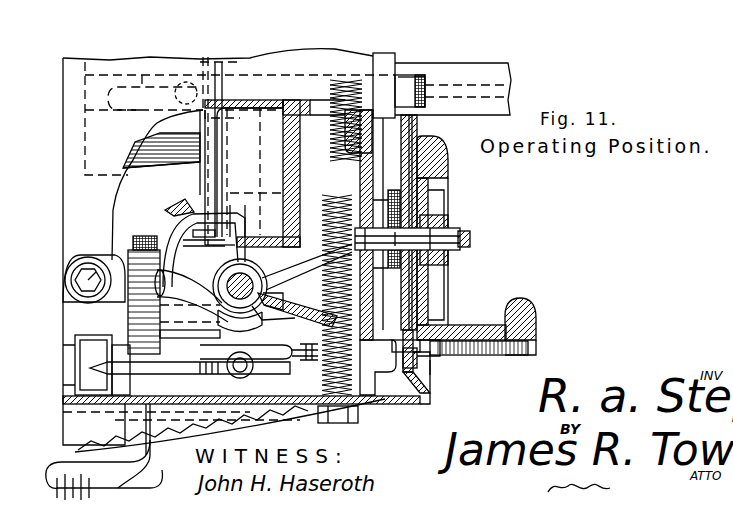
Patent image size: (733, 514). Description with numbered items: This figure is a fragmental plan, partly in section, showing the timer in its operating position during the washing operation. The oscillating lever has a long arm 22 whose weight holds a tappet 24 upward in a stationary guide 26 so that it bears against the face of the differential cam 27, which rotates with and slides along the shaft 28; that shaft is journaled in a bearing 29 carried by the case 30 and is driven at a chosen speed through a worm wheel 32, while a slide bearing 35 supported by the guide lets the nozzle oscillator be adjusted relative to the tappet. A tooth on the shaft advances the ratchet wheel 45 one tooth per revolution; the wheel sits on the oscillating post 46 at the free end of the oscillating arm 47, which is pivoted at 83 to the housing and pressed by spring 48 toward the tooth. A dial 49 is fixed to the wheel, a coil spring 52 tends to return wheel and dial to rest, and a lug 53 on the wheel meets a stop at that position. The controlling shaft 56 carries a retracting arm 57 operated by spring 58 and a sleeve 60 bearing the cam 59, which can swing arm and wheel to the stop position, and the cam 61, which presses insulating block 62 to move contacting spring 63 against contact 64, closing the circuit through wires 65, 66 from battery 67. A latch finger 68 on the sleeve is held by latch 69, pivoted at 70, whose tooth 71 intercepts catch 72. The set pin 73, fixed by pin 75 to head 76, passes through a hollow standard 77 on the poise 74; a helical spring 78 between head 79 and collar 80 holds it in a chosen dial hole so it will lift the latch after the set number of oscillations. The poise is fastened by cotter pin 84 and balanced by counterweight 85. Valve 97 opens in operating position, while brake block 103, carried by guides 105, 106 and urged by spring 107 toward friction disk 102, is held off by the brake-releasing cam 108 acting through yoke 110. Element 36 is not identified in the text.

The arm 22 is at (453, 72).
The tappet 24 is at (186, 82).
The stationary guide 26 is at (173, 86).
The differential cam 27 is at (158, 185).
The shaft 28 is at (413, 80).
The bearing 29 is at (356, 72).
The case 30 is at (218, 247).
The worm wheel 32 is at (314, 173).
The slide bearing 35 is at (398, 77).
The cylinder 36 is at (206, 186).
The ratchet wheel 45 is at (417, 120).
The oscillating post 46 is at (461, 236).
The oscillating arm 47 is at (351, 311).
The spring 48 is at (372, 144).
The dial 49 is at (416, 128).
The coil spring 52 is at (393, 200).
The lug 53 is at (384, 224).
The controlling shaft 56 is at (232, 277).
The retracting arm 57 is at (305, 310).
The spring 58 is at (330, 92).
The cam 59 is at (208, 281).
The sleeve 60 is at (251, 281).
The cam 61 is at (256, 313).
The insulating block 62 is at (325, 336).
The contacting spring 63 is at (265, 352).
The contact 64 is at (255, 368).
The wire 65 is at (58, 461).
The wire 66 is at (150, 478).
The battery 67 is at (86, 492).
The latch finger 68 is at (47, 327).
The latch 69 is at (378, 381).
The pivot 70 is at (72, 392).
The tooth 71 is at (272, 413).
The catch 72 is at (225, 379).
The set pin 73 is at (533, 341).
The poise 74 is at (436, 201).
The pin 75 is at (534, 324).
The head 76 is at (517, 323).
The hollow standard 77 is at (470, 328).
The helical spring 78 is at (437, 356).
The head 79 is at (483, 360).
The collar 80 is at (417, 380).
The pivot 83 is at (77, 270).
The cotter pin 84 is at (468, 240).
The counterweight 85 is at (436, 146).
The valve 97 is at (268, 238).
The friction disk 102 is at (177, 213).
The brake shoe block 103 is at (318, 237).
The guide 105 is at (340, 421).
The guide 106 is at (153, 234).
The spring 107 is at (127, 265).
The brake-releasing cam 108 is at (264, 326).
The yoke 110 is at (236, 149).